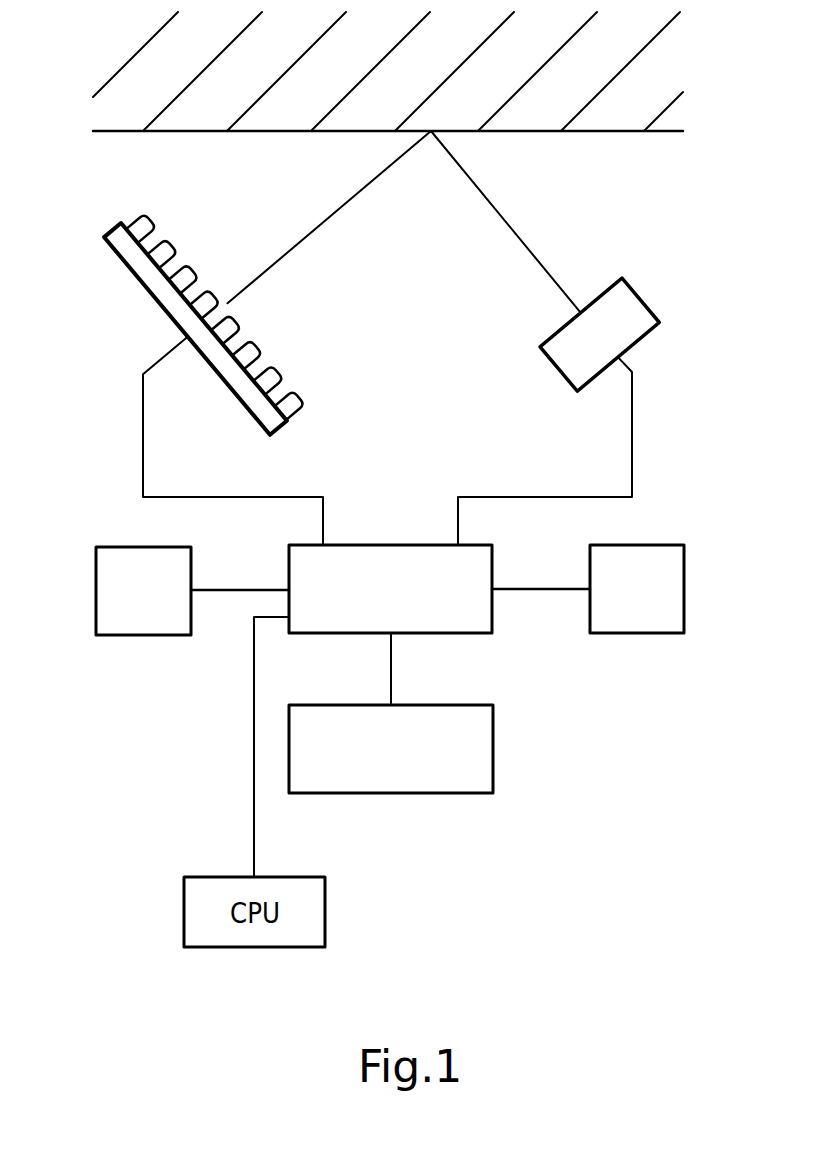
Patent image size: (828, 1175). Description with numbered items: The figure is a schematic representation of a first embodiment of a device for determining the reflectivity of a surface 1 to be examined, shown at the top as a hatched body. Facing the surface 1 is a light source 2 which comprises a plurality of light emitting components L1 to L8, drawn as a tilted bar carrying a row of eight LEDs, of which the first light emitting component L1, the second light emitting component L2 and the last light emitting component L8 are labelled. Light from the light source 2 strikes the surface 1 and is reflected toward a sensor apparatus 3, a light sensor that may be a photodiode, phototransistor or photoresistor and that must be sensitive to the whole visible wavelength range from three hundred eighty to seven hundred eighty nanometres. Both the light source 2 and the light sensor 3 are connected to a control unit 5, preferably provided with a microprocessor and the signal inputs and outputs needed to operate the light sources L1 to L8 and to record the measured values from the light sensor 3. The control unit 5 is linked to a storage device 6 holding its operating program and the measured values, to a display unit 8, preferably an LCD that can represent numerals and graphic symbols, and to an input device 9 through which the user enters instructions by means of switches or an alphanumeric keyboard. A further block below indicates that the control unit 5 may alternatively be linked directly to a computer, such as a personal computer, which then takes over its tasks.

The surface 1 is at (613, 131).
The light source 2 is at (112, 233).
The light emitting component L1 is at (151, 217).
The light emitting component L2 is at (173, 237).
The light emitting component L8 is at (297, 387).
The sensor apparatus 3 is at (637, 295).
The control unit 5 is at (488, 608).
The storage device 6 is at (637, 628).
The display unit 8 is at (440, 787).
The input device 9 is at (152, 627).